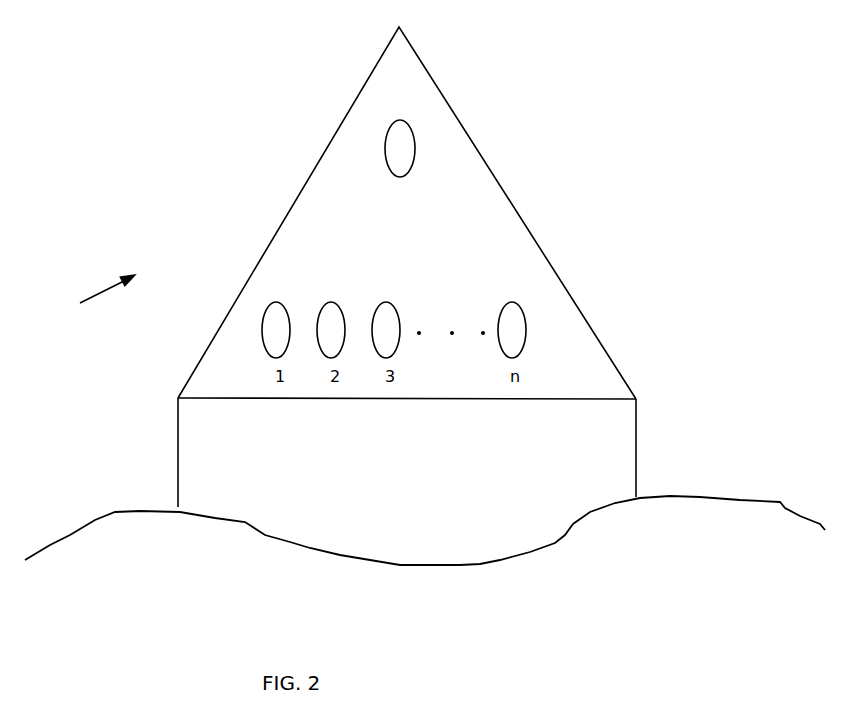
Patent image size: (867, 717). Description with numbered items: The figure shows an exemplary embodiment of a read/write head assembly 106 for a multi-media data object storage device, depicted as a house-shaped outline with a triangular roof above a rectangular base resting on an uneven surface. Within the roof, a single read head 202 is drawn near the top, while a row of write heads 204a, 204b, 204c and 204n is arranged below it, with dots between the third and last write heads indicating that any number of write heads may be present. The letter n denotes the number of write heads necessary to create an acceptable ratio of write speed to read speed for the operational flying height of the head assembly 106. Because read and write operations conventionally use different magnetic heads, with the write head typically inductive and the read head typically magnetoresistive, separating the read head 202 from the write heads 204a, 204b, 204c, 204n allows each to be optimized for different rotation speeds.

The head assembly 106 is at (101, 302).
The read head 202 is at (402, 122).
The write head 204a is at (277, 303).
The write head 204b is at (332, 303).
The write head 204c is at (387, 303).
The write head 204n is at (513, 303).